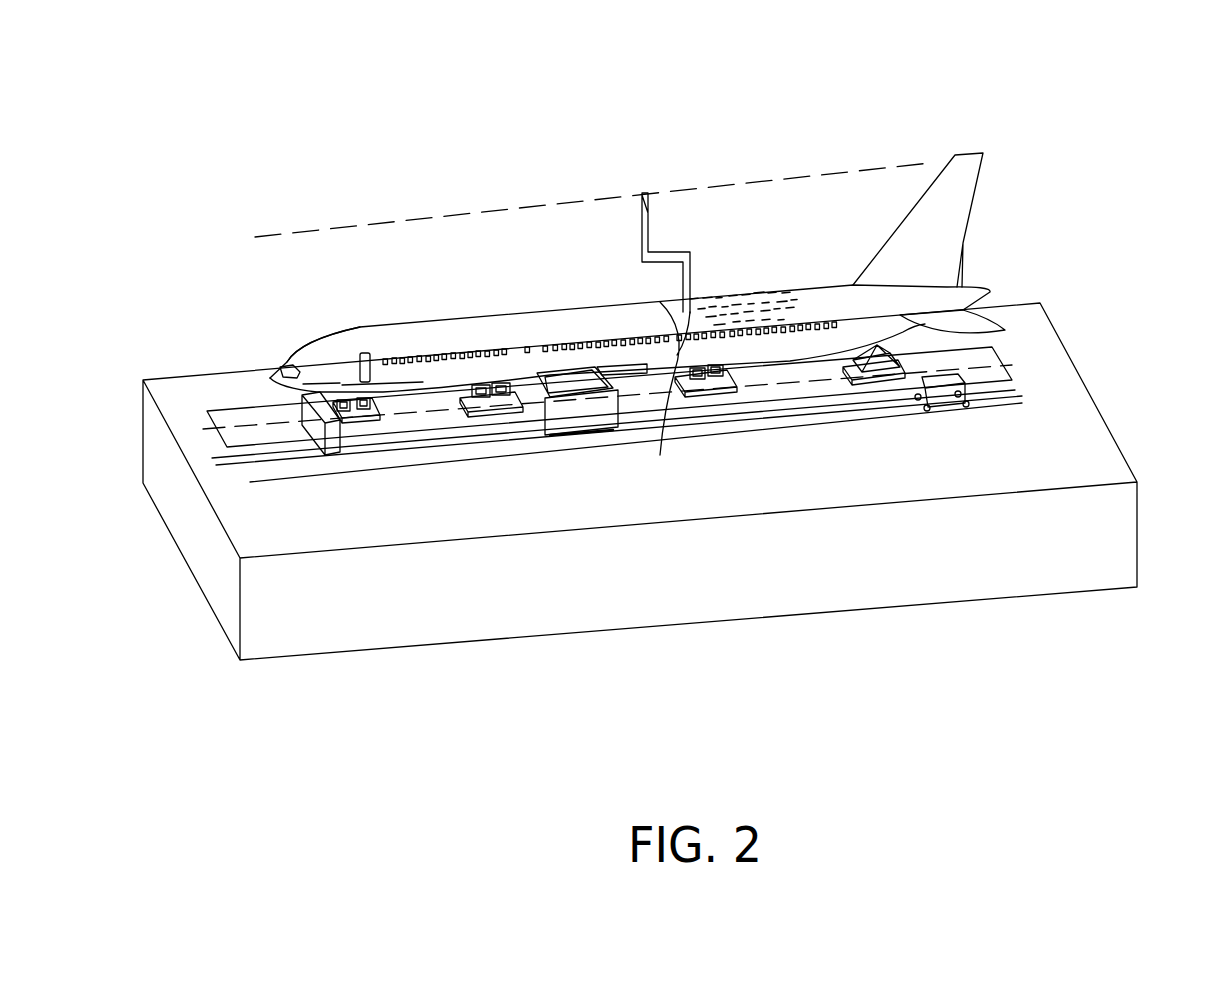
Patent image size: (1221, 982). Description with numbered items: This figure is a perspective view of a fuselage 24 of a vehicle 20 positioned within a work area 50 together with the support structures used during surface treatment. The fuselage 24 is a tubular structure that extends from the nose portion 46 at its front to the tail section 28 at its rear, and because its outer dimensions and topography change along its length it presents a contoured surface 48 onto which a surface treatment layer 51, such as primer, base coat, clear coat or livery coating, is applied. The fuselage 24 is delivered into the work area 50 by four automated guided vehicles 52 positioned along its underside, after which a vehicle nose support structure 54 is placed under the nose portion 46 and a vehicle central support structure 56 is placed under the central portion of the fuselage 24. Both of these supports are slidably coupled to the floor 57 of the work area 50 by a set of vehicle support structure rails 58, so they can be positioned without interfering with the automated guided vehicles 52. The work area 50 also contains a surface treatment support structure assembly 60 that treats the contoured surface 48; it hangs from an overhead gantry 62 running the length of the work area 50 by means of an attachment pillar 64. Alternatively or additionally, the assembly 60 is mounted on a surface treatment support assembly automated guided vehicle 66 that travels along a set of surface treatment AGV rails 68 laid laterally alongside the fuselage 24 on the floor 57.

The vehicle 20 is at (268, 292).
The fuselage 24 is at (478, 323).
The tail section 28 is at (1010, 172).
The nose portion 46 is at (280, 372).
The contoured surface 48 is at (398, 303).
The work area 50 is at (1072, 411).
The surface treatment layer 51 is at (759, 300).
The automated guided vehicle 52 is at (360, 420).
The vehicle nose support structure 54 is at (335, 462).
The vehicle central support structure 56 is at (580, 422).
The floor 57 is at (917, 468).
The vehicle support structure rails 58 is at (253, 462).
The surface treatment support structure assembly 60 is at (671, 396).
The overhead gantry 62 is at (642, 197).
The attachment pillar 64 is at (690, 272).
The surface treatment support assembly automated guided vehicle 66 is at (947, 372).
The surface treatment AGV rails 68 is at (810, 425).